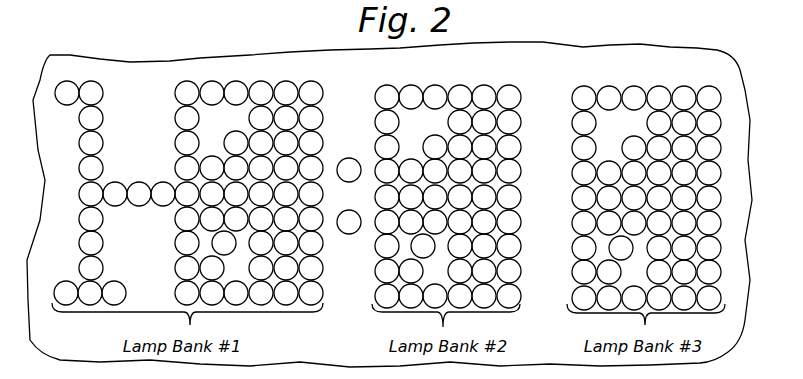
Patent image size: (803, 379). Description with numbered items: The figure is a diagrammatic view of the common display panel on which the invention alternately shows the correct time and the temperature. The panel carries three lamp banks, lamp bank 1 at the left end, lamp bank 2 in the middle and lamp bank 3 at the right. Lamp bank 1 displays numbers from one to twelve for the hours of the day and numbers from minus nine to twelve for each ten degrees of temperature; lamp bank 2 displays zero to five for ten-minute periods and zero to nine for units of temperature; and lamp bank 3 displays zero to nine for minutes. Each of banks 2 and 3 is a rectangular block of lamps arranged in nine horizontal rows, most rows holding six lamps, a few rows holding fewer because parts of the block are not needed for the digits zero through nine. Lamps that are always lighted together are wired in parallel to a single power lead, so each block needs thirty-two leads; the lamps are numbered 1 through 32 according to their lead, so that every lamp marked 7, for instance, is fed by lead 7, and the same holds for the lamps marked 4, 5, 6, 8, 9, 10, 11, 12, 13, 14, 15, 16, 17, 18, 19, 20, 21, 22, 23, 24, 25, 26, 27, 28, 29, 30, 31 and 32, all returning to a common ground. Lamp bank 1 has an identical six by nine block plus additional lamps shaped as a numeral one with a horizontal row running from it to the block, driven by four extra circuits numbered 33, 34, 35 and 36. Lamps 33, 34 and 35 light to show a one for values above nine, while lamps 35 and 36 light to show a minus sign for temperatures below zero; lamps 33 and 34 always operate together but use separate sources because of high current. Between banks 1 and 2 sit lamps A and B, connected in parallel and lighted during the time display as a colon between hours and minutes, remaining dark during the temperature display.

The lamp bank 1 is at (448, 95).
The lamp bank 2 is at (410, 195).
The lamp bank 3 is at (447, 95).
The lamps lighted by power lead 4 is at (485, 95).
The lamps lighted by power lead 5 is at (385, 195).
The lamps lighted by power lead 6 is at (460, 170).
The lamps lighted by power lead 7 is at (460, 195).
The lamps lighted by power lead 8 is at (510, 120).
The lamps lighted by power lead 9 is at (385, 158).
The lamps lighted by power lead 10 is at (460, 207).
The lamps lighted by power lead 11 is at (510, 145).
The lamps lighted by power lead 12 is at (410, 170).
The lamps lighted by power lead 13 is at (435, 170).
The lamps lighted by power lead 14 is at (460, 170).
The lamps lighted by power lead 15 is at (485, 170).
The lamps lighted by power lead 16 is at (510, 170).
The lamps lighted by power lead 17 is at (385, 196).
The lamps lighted by power lead 18 is at (410, 196).
The lamps lighted by power lead 19 is at (435, 196).
The lamps lighted by power lead 20 is at (460, 196).
The lamps lighted by power lead 21 is at (485, 196).
The lamps lighted by power lead 22 is at (510, 196).
The lamps lighted by power lead 23 is at (385, 221).
The lamps lighted by power lead 24 is at (410, 221).
The lamps lighted by power lead 25 is at (435, 221).
The lamps lighted by power lead 26 is at (510, 221).
The lamps lighted by power lead 27 is at (385, 245).
The lamps lighted by power lead 28 is at (416, 257).
The lamps lighted by power lead 29 is at (510, 257).
The lamps lighted by power lead 30 is at (448, 295).
The lamps lighted by power lead 31 is at (447, 295).
The lamps lighted by power lead 32 is at (485, 295).
The additional lamps of bank 1 33 is at (79, 130).
The additional lamps of bank 1 34 is at (90, 256).
The additional lamp of bank 1 35 is at (91, 194).
The additional lamps of bank 1 36 is at (139, 194).
The lamp A is at (349, 170).
The lamp B is at (349, 222).